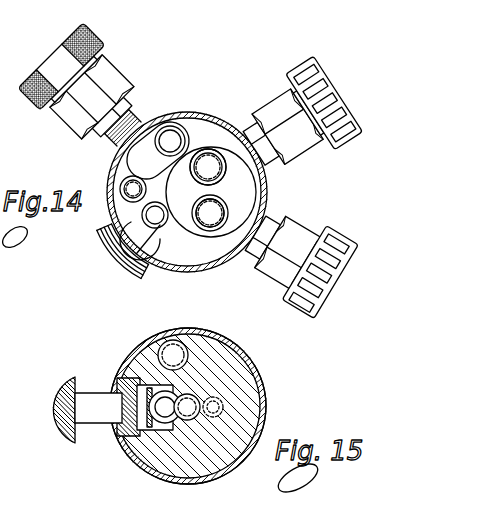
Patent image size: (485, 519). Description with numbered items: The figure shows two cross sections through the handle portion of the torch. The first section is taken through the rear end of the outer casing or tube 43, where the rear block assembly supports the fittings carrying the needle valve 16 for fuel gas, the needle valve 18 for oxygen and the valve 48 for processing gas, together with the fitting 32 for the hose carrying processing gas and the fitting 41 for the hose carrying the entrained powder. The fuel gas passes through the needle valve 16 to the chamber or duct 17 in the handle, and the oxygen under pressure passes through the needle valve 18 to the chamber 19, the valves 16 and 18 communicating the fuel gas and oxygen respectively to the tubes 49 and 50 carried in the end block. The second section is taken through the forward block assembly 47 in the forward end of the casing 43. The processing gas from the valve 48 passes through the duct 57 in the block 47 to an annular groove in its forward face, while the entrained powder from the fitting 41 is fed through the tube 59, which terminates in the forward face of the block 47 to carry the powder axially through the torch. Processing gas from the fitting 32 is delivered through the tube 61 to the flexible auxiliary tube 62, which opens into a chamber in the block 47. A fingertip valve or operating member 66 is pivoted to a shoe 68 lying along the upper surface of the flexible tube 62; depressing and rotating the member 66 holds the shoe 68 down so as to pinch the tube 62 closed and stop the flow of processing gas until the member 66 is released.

In FIG. 14, the needle valve 16 is at (301, 150).
In FIG. 14, the chamber 17 is at (209, 151).
In FIG. 14, the needle valve 18 is at (268, 268).
In FIG. 14, the chamber 19 is at (213, 232).
In FIG. 14, the fitting 32 is at (124, 197).
In FIG. 14, the fitting 41 is at (122, 262).
In FIG. 14, the outer casing 43 is at (187, 192).
In FIG. 15, the outer casing 43 is at (266, 401).
In FIG. 15, the forward block assembly 47 is at (221, 343).
In FIG. 14, the valve 48 is at (113, 77).
In FIG. 14, the tube 49 is at (199, 174).
In FIG. 14, the tube 50 is at (226, 209).
In FIG. 15, the duct 57 is at (171, 341).
In FIG. 14, the tube 59 is at (161, 226).
In FIG. 15, the tube 61 is at (160, 424).
In FIG. 15, the auxiliary tube 62 is at (150, 388).
In FIG. 15, the operating member 66 is at (107, 413).
In FIG. 15, the shoe 68 is at (133, 372).